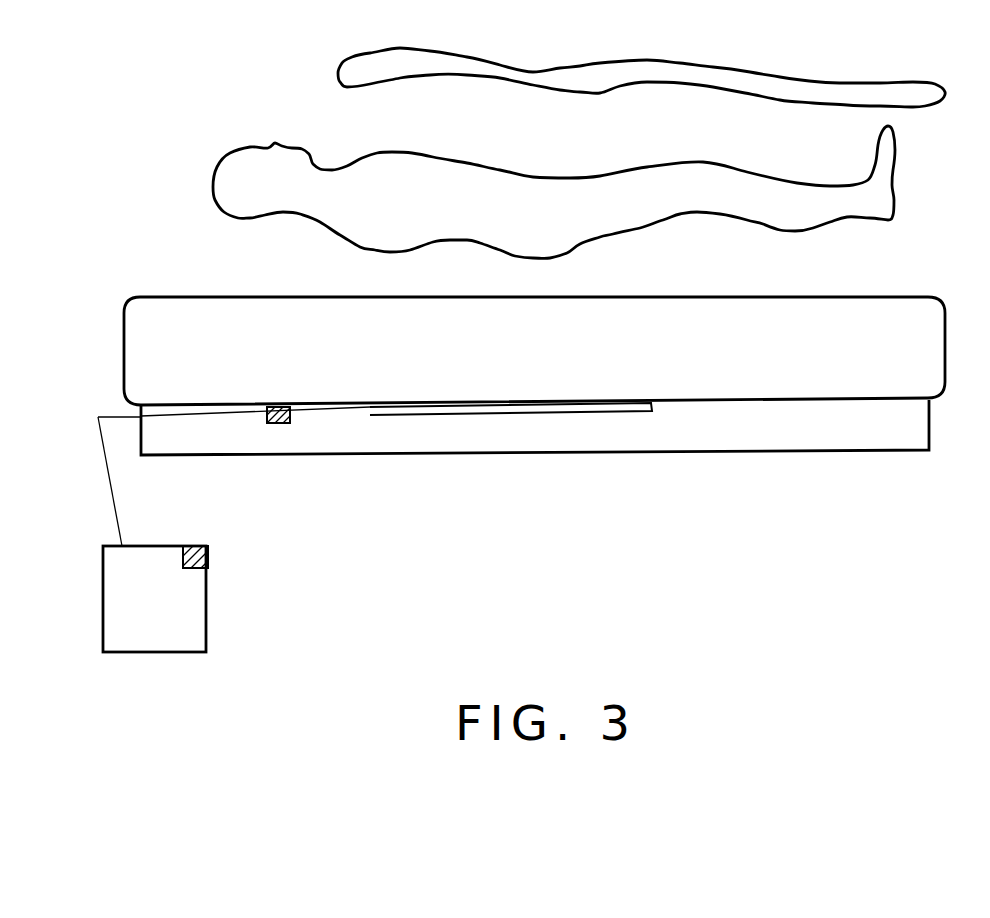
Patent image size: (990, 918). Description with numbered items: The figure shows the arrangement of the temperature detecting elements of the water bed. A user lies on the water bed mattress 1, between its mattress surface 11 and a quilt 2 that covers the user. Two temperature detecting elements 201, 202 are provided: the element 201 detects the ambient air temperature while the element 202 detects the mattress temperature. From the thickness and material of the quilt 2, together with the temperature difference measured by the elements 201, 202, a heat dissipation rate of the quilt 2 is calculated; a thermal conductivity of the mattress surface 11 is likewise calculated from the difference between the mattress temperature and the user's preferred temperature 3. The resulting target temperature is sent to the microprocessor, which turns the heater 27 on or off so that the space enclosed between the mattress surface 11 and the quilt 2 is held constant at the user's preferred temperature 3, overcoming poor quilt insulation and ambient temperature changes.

The water bed mattress 1 is at (888, 380).
The mattress surface 11 is at (870, 297).
The quilt 2 is at (734, 79).
The user's preferred temperature 3 is at (356, 122).
The heater 27 is at (598, 408).
The temperature detecting element 202 is at (280, 423).
The temperature detecting element 201 is at (208, 556).